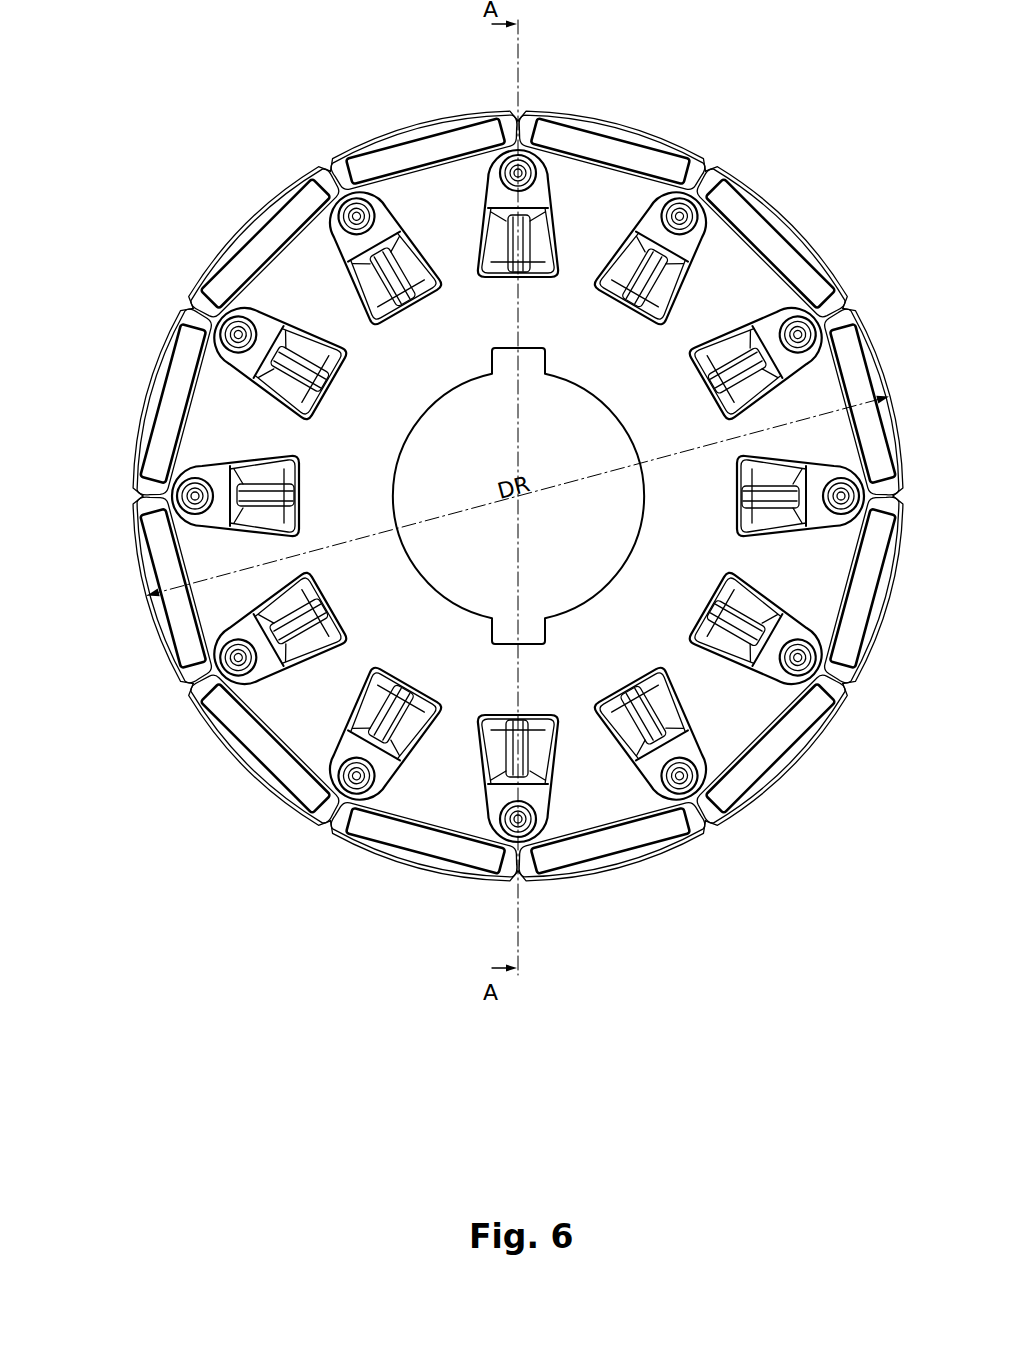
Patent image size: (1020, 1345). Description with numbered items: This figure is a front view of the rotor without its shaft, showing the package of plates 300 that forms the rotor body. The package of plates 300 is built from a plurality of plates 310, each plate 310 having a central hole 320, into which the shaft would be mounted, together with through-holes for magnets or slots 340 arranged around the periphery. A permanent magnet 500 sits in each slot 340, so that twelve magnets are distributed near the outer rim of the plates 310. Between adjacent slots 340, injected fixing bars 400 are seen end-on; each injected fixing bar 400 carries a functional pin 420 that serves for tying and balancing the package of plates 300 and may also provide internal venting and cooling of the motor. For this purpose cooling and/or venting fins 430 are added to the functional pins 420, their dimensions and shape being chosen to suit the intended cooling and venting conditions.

The package of plates 300 is at (244, 222).
The plate 310 is at (712, 288).
The central hole 320 is at (470, 422).
The slot 340 is at (172, 405).
The injected fixing bar 400 is at (680, 745).
The functional pin 420 is at (220, 665).
The fin 430 is at (240, 683).
The permanent magnet 500 is at (603, 152).